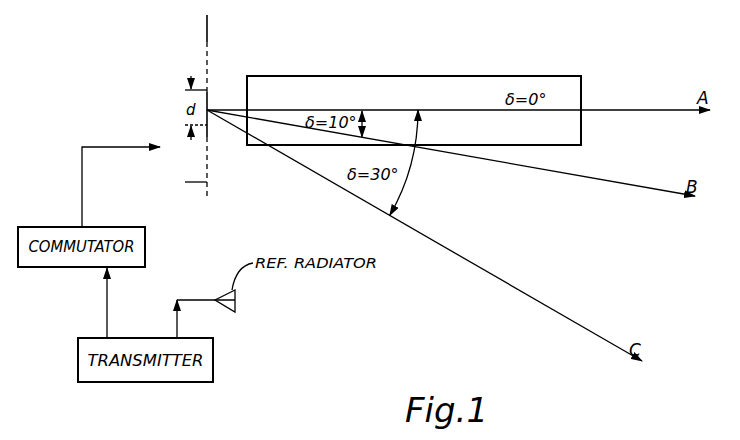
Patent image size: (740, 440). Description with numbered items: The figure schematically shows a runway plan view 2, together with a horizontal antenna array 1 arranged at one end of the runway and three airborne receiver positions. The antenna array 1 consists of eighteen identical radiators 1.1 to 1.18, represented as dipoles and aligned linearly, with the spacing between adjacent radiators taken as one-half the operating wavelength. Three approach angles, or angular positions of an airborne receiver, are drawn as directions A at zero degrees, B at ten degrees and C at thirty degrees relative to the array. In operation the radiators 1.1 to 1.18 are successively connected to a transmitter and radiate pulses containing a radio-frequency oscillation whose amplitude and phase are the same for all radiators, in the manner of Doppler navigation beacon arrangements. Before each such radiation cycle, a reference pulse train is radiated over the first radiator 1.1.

The horizontal antenna array 1 is at (197, 131).
The radiator 1.1 is at (207, 30).
The radiator 1.18 is at (182, 183).
The runway plan view 2 is at (570, 76).